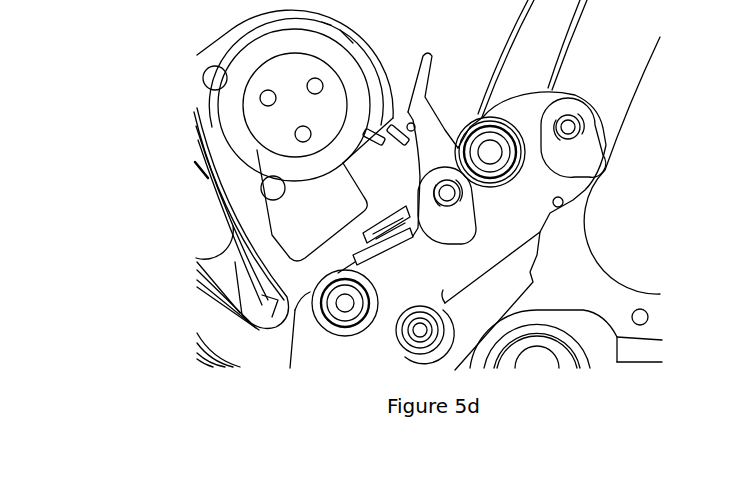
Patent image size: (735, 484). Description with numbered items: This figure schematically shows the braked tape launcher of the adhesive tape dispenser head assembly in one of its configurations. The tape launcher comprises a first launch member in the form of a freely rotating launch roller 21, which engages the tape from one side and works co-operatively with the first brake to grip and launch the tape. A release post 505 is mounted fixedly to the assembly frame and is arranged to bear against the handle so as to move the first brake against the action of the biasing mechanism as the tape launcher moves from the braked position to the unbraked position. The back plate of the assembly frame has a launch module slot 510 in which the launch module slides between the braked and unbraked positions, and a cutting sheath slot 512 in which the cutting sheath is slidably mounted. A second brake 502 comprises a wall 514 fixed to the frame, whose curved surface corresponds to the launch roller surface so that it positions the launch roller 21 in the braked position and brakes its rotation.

The release post 505 is at (408, 125).
The launch module slot 510 is at (558, 60).
The second brake 502 is at (540, 236).
The wall 514 is at (540, 250).
The cutting sheath slot 512 is at (281, 307).
The launch roller 21 is at (397, 351).